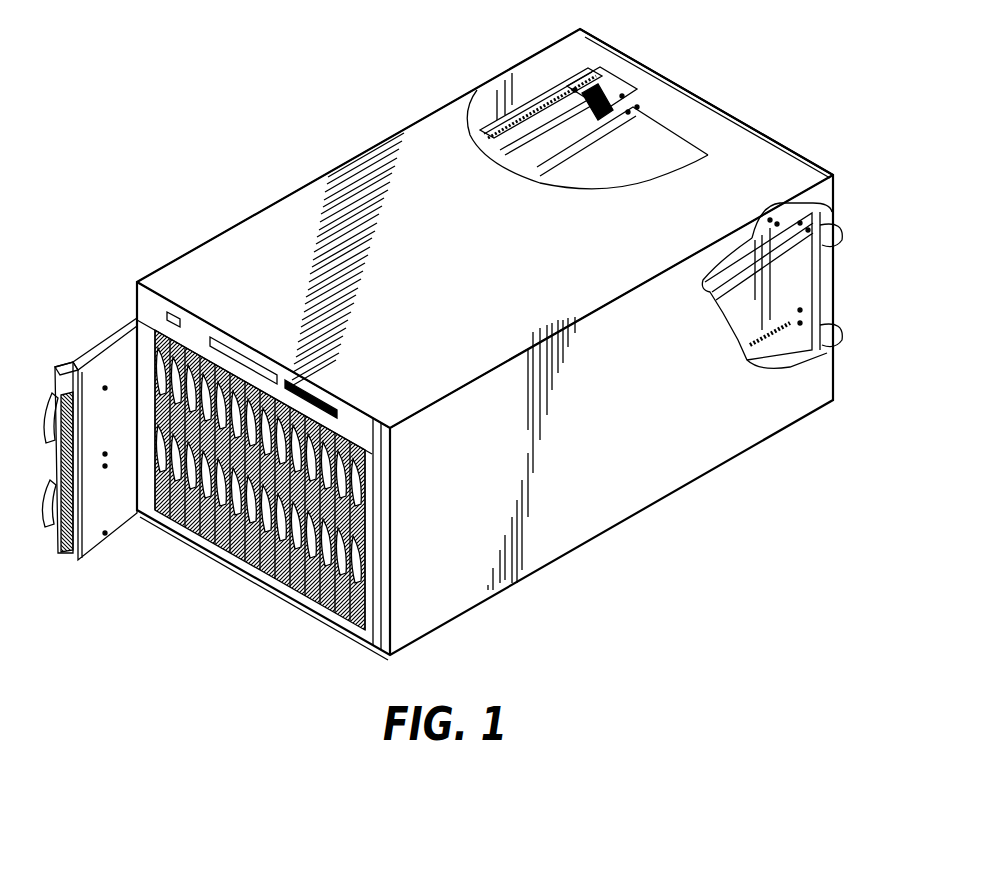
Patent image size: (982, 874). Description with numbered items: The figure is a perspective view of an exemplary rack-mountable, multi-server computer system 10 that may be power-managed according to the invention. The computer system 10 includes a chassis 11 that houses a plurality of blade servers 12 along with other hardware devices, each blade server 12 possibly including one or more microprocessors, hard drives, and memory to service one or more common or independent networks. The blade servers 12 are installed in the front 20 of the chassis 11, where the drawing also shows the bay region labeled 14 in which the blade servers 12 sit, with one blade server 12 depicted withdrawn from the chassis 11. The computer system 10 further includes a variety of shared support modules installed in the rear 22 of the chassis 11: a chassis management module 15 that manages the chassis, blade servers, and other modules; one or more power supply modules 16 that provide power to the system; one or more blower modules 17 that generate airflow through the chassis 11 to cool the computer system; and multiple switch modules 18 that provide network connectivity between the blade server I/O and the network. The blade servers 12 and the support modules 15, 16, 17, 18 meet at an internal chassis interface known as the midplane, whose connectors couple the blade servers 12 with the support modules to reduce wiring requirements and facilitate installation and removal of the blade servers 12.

The multi-server computer system 10 is at (288, 130).
The chassis 11 is at (227, 248).
The blade server 12 is at (73, 557).
The front bay with blade modules 14 is at (288, 595).
The chassis management module 15 is at (528, 105).
The power supply module 16 is at (615, 98).
The blower module 17 is at (645, 172).
The switch module 18 is at (790, 280).
The front of the chassis 20 is at (172, 574).
The rear of the chassis 22 is at (752, 128).